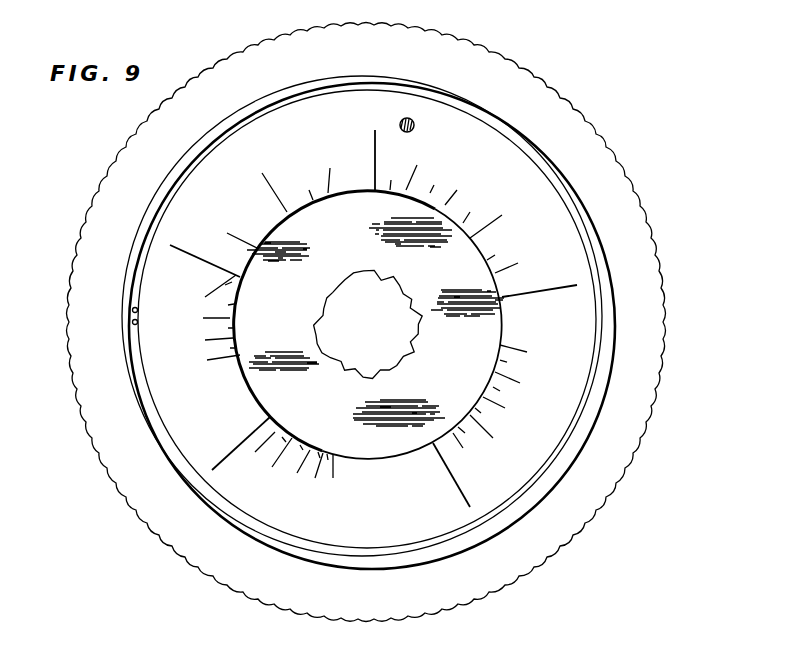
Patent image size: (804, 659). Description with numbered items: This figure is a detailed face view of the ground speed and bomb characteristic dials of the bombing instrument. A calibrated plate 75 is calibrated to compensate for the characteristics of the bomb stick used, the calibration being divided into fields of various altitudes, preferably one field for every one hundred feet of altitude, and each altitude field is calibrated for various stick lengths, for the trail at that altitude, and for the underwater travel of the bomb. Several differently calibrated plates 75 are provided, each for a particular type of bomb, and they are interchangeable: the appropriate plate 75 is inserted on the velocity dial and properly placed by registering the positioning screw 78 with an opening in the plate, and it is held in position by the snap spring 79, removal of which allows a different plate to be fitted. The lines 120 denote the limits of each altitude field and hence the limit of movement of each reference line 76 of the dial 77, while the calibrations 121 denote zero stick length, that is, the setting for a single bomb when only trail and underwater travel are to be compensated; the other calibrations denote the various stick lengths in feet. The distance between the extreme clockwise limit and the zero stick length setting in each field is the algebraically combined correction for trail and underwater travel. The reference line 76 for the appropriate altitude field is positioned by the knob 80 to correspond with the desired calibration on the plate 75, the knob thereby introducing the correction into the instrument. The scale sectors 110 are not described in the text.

The calibrated plate 75 is at (383, 322).
The reference line 76 is at (369, 325).
The dial 77 is at (362, 316).
The positioning screw 78 is at (433, 103).
The snap spring 79 is at (122, 280).
The knob 80 is at (365, 317).
The scale sector 110 is at (388, 326).
The lines 120 is at (379, 301).
The calibrations 121 is at (362, 301).